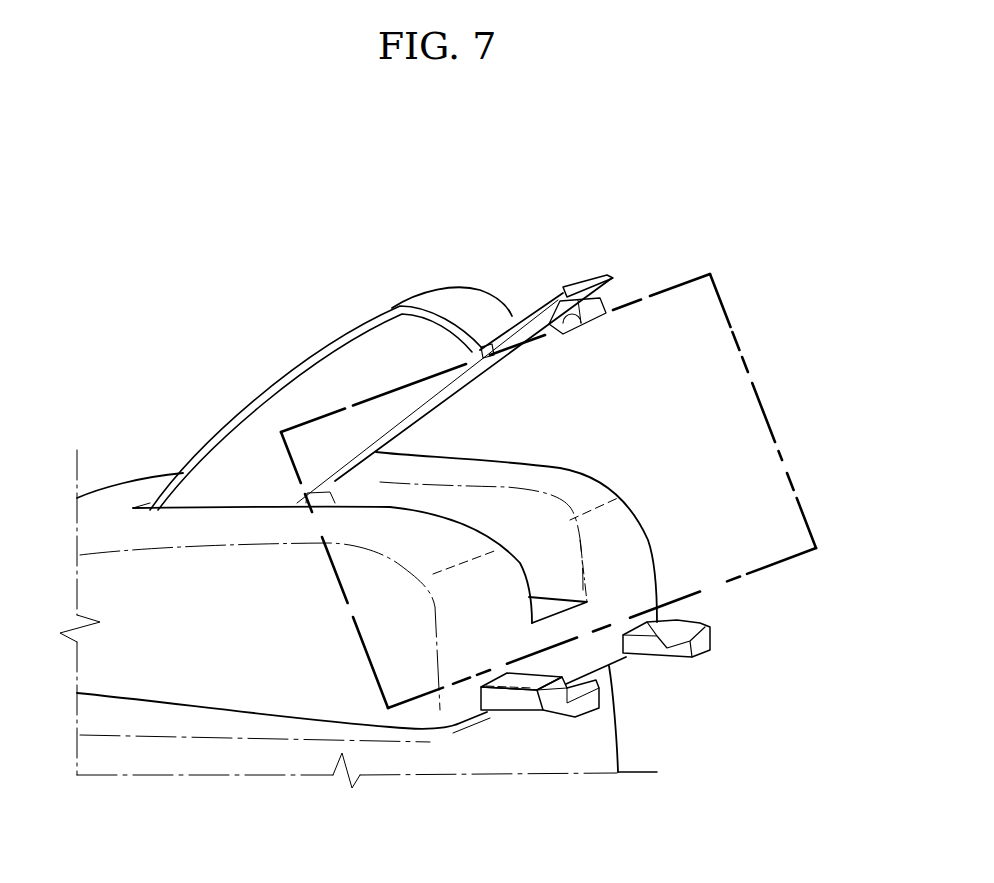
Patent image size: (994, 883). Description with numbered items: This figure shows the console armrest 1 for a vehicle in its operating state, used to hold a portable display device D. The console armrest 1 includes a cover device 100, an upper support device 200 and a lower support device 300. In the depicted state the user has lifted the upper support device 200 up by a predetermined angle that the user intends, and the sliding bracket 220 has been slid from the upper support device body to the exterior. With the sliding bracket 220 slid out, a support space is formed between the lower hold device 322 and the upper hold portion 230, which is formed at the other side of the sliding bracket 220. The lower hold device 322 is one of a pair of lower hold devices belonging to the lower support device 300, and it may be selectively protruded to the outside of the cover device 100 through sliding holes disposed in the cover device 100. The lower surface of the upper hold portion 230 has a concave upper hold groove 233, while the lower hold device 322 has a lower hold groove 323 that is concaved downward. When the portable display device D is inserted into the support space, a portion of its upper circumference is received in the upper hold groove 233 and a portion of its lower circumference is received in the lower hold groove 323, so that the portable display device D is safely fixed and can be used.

The console armrest 1 is at (218, 250).
The cover device 100 is at (143, 437).
The upper support device 200 is at (377, 307).
The sliding bracket 220 is at (573, 263).
The upper hold portion 230 is at (608, 312).
The upper hold groove 233 is at (572, 332).
The lower support device 300 is at (563, 724).
The lower hold device 322 is at (583, 702).
The lower hold groove 323 is at (553, 693).
The portable display device D is at (685, 273).